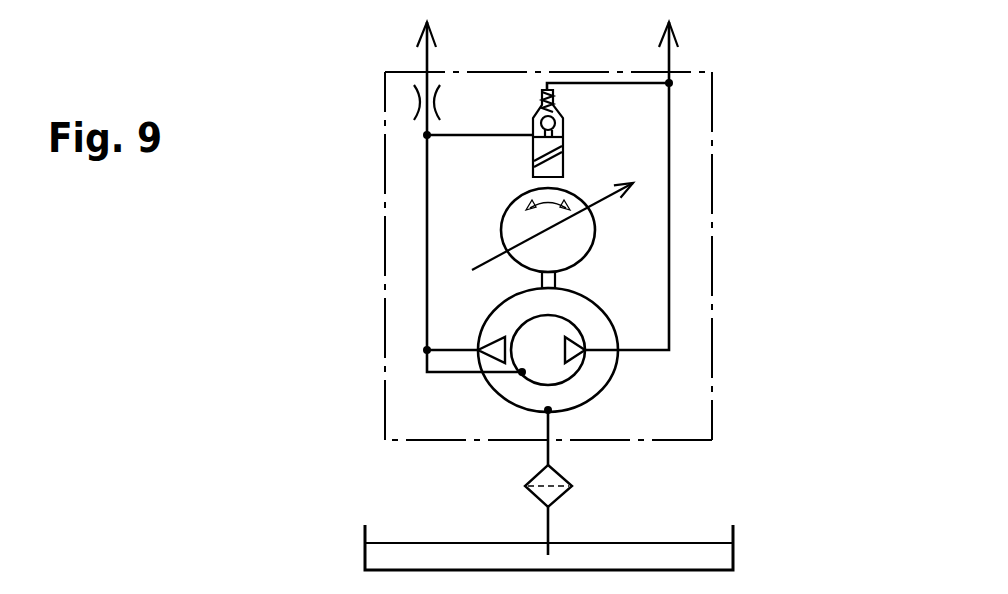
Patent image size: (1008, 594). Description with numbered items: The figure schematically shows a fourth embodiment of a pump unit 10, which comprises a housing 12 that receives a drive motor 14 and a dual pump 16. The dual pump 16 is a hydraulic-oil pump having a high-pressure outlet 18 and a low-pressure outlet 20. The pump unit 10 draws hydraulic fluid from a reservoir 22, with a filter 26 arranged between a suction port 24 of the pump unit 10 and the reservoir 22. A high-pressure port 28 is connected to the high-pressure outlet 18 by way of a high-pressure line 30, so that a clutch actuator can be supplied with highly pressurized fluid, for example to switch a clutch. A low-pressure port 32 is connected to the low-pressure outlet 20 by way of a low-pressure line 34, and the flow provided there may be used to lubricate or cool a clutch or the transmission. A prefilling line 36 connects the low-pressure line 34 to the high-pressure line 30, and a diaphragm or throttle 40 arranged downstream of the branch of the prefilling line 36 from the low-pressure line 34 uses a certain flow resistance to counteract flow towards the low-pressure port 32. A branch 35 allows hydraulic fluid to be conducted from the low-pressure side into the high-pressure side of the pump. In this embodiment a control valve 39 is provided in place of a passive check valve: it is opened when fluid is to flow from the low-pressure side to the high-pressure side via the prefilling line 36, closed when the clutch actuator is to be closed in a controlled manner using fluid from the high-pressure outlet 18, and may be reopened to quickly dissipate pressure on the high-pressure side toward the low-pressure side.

The pump unit 10 is at (790, 42).
The housing 12 is at (712, 215).
The drive motor 14 is at (596, 237).
The dual pump 16 is at (593, 298).
The high-pressure outlet 18 is at (585, 350).
The low-pressure outlet 20 is at (478, 348).
The reservoir 22 is at (733, 535).
The suction port 24 is at (548, 440).
The filter 26 is at (532, 498).
The high-pressure port 28 is at (669, 72).
The high-pressure line 30 is at (669, 315).
The low-pressure port 32 is at (427, 72).
The low-pressure line 34 is at (427, 198).
The branch 35 is at (458, 375).
The prefilling line 36 is at (493, 135).
The control valve 39 is at (563, 135).
The diaphragm or throttle 40 is at (392, 97).